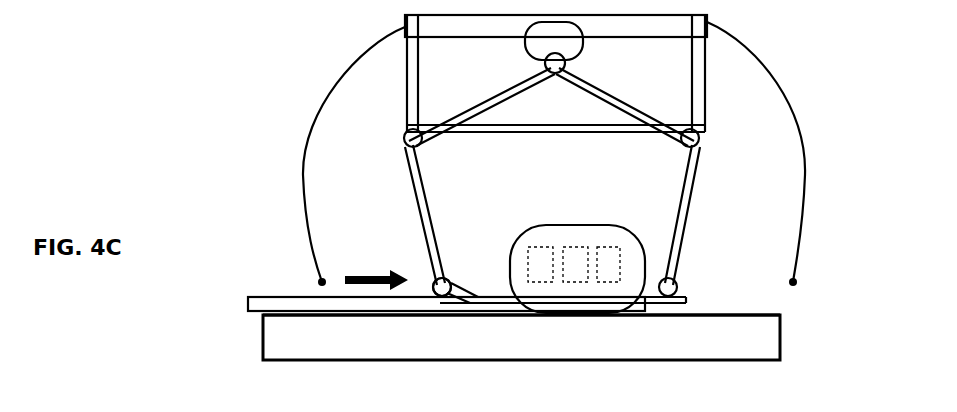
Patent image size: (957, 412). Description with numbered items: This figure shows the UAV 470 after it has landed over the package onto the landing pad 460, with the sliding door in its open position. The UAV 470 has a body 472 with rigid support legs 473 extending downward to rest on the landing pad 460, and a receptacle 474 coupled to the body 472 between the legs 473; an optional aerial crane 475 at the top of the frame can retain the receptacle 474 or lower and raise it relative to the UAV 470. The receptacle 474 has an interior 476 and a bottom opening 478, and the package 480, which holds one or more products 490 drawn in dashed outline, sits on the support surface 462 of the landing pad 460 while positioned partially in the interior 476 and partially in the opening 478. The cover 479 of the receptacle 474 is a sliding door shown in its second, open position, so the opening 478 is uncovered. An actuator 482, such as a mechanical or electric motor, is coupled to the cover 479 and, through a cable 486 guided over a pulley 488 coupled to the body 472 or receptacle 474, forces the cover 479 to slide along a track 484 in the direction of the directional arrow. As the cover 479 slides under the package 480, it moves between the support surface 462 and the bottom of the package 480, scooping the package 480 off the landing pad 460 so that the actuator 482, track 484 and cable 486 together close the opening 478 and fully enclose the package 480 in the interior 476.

The UAV 470 is at (292, 64).
The body 472 is at (490, 39).
The support legs 473 is at (305, 174).
The receptacle 474 is at (407, 175).
The aerial crane 475 is at (585, 50).
The interior 476 is at (579, 177).
The opening 478 is at (507, 289).
The cover 479 is at (250, 303).
The package 480 is at (580, 226).
The actuator 482 is at (442, 293).
The track 484 is at (647, 300).
The cable 486 is at (459, 292).
The pulley 488 is at (446, 278).
The product 490 is at (620, 264).
The landing pad 460 is at (783, 330).
The support surface 462 is at (717, 314).